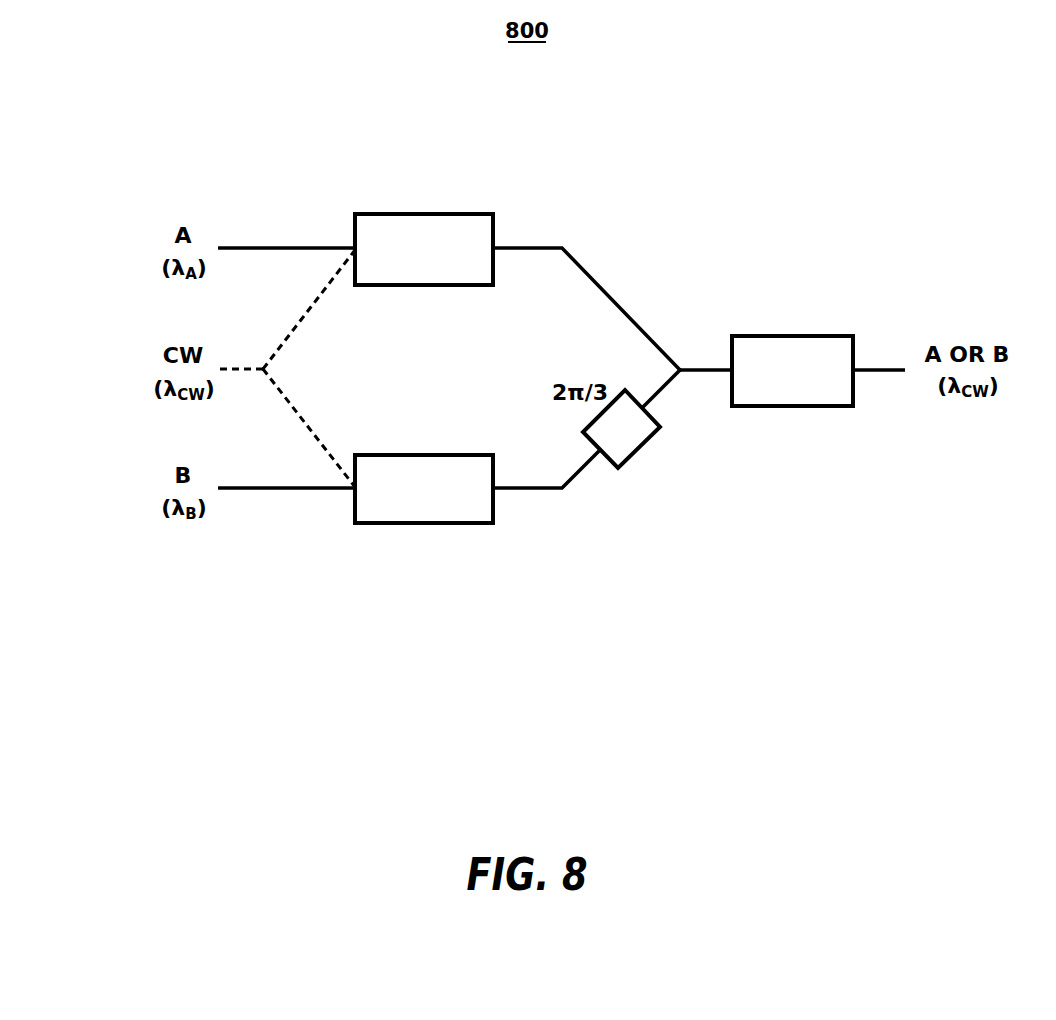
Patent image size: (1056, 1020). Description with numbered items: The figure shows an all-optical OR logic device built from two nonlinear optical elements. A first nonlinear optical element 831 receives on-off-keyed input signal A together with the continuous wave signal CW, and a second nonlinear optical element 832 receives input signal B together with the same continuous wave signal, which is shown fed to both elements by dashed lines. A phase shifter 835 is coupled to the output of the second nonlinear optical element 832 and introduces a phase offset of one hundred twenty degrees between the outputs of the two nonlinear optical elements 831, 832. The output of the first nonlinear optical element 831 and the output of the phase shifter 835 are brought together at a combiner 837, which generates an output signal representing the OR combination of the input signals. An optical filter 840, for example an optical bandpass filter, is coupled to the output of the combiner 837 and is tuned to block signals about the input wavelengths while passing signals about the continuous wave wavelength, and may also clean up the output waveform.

The nonlinear optical element 831 is at (423, 214).
The nonlinear optical element 832 is at (423, 523).
The phase shifter 835 is at (637, 448).
The combiner 837 is at (685, 360).
The optical filter 840 is at (798, 336).